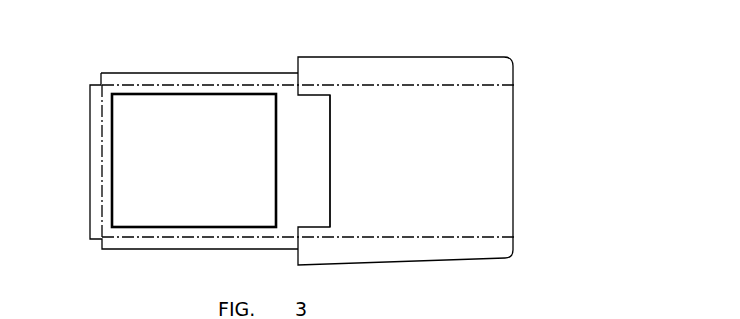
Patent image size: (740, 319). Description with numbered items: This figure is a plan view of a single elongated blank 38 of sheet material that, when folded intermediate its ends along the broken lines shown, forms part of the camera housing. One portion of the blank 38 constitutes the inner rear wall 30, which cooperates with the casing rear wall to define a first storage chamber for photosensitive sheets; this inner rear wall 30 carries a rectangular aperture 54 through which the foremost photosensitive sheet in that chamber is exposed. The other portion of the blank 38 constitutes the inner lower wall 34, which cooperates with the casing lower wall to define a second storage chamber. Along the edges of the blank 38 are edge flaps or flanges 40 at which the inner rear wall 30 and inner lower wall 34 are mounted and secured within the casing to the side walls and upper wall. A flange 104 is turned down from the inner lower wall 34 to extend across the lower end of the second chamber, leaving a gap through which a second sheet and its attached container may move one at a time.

The elongated blank 38 is at (269, 73).
The edge flaps or flanges 40 is at (209, 77).
The inner rear wall 30 is at (140, 230).
The rectangular aperture 54 is at (276, 122).
The inner lower wall 34 is at (405, 161).
The flange 104 is at (322, 150).